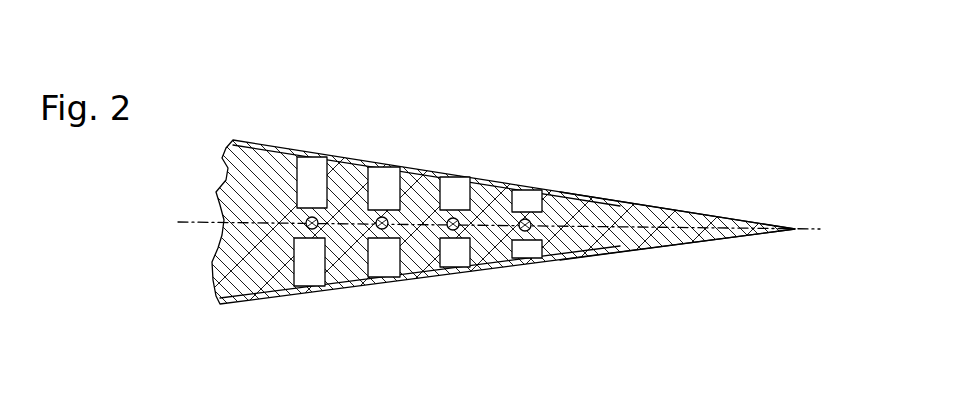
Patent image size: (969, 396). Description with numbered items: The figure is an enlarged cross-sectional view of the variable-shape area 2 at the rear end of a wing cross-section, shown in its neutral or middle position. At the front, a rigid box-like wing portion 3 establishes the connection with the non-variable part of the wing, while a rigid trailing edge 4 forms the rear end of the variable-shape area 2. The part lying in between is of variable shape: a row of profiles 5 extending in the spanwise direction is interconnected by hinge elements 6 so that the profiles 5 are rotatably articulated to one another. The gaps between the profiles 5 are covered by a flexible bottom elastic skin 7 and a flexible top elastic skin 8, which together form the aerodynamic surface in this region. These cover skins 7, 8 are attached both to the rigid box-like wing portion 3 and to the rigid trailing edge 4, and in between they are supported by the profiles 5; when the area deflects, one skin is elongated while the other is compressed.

The variable-shape area 2 is at (879, 254).
The rigid box-like wing portion 3 is at (249, 172).
The rigid trailing edge 4 is at (636, 202).
The profiles 5 is at (491, 188).
The hinge elements 6 is at (533, 206).
The bottom elastic skin 7 is at (508, 274).
The top elastic skin 8 is at (303, 142).